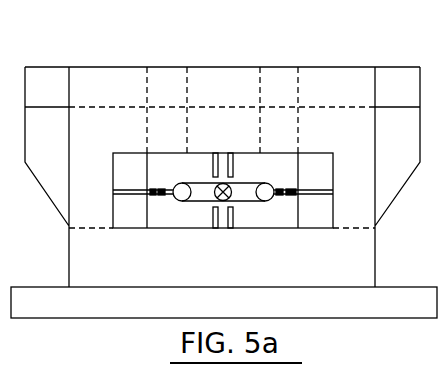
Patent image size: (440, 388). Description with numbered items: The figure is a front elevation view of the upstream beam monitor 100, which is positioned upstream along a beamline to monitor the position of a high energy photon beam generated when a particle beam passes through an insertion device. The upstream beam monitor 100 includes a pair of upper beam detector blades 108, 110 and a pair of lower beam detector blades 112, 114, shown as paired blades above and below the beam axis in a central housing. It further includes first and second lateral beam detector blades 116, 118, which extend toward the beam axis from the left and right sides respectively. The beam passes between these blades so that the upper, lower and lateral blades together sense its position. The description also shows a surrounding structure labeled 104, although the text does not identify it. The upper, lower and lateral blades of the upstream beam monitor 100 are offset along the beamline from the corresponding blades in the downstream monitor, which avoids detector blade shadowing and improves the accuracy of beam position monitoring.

The upstream beam monitor 100 is at (137, 64).
The housing body 104 is at (287, 67).
The upper beam detector blade 108 is at (212, 166).
The upper beam detector blade 110 is at (234, 167).
The lower beam detector blade 112 is at (213, 216).
The lower beam detector blade 114 is at (234, 215).
The first lateral beam detector blade 116 is at (159, 197).
The second lateral beam detector blade 118 is at (284, 197).